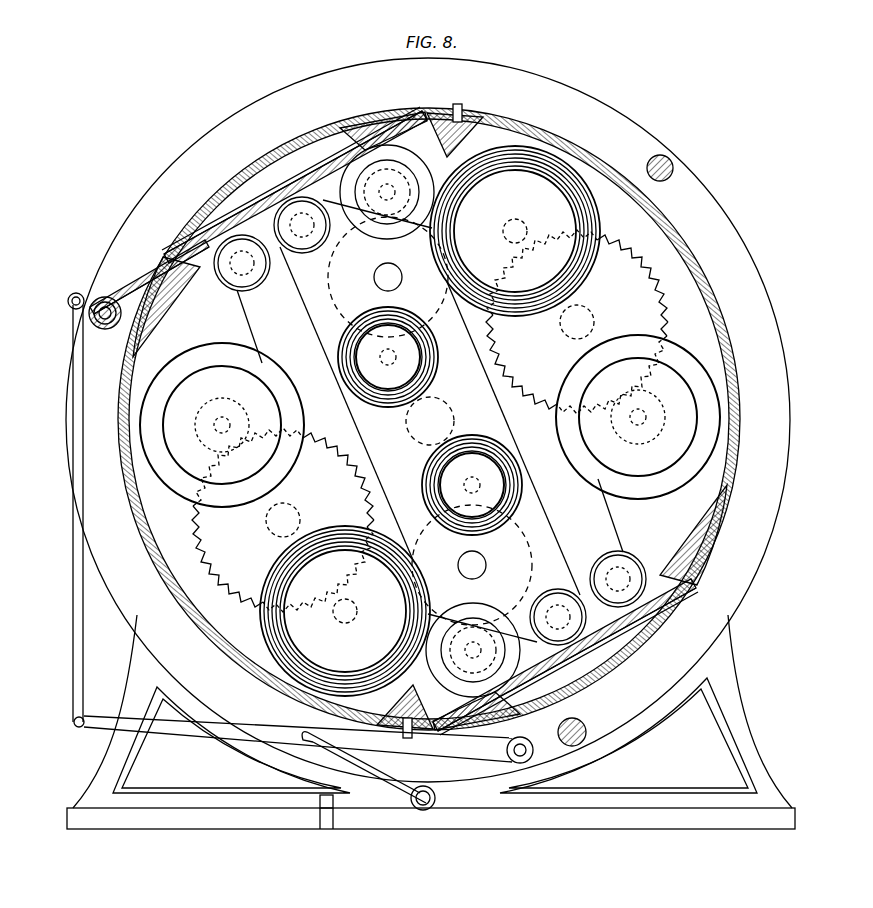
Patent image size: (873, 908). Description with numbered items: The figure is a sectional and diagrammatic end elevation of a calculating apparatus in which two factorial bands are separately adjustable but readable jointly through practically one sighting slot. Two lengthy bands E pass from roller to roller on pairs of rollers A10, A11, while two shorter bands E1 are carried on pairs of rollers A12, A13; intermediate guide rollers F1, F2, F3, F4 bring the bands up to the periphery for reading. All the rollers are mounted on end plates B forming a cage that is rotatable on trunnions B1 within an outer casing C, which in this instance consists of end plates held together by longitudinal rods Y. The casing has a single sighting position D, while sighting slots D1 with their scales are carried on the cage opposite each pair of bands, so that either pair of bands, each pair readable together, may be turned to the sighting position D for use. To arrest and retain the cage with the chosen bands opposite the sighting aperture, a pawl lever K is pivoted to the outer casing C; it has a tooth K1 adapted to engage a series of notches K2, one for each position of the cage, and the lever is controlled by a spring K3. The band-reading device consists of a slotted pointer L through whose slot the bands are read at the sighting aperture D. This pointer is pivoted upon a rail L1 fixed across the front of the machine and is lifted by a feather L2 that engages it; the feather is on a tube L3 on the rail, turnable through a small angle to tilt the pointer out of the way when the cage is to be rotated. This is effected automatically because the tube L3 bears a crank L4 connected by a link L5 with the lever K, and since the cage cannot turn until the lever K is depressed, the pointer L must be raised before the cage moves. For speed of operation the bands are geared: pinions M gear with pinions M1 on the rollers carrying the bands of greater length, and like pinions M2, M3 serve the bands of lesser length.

The band roller A10 is at (285, 519).
The band roller A11 is at (575, 322).
The band roller A12 is at (360, 238).
The band roller A13 is at (452, 700).
The end plate B is at (430, 443).
The trunnion B1 is at (452, 418).
The outer casing C is at (580, 140).
The sighting position D is at (430, 421).
The sighting slot D1 is at (300, 178).
The lengthy band E is at (296, 308).
The shorter band E1 is at (332, 272).
The guide roller F1 is at (222, 291).
The guide roller F2 is at (630, 563).
The guide roller F3 is at (310, 214).
The guide roller F4 is at (535, 607).
The pawl lever K is at (470, 752).
The tooth K1 is at (406, 742).
The notch K2 is at (457, 106).
The spring K3 is at (350, 760).
The slotted pointer L is at (172, 258).
The rail L1 is at (130, 295).
The feather L2 is at (108, 330).
The tube L3 is at (92, 318).
The crank L4 is at (75, 298).
The link L5 is at (83, 513).
The pinion M is at (430, 421).
The pinion M1 is at (240, 400).
The pinion M2 is at (433, 300).
The pinion M3 is at (397, 168).
The longitudinal rod Y is at (652, 160).